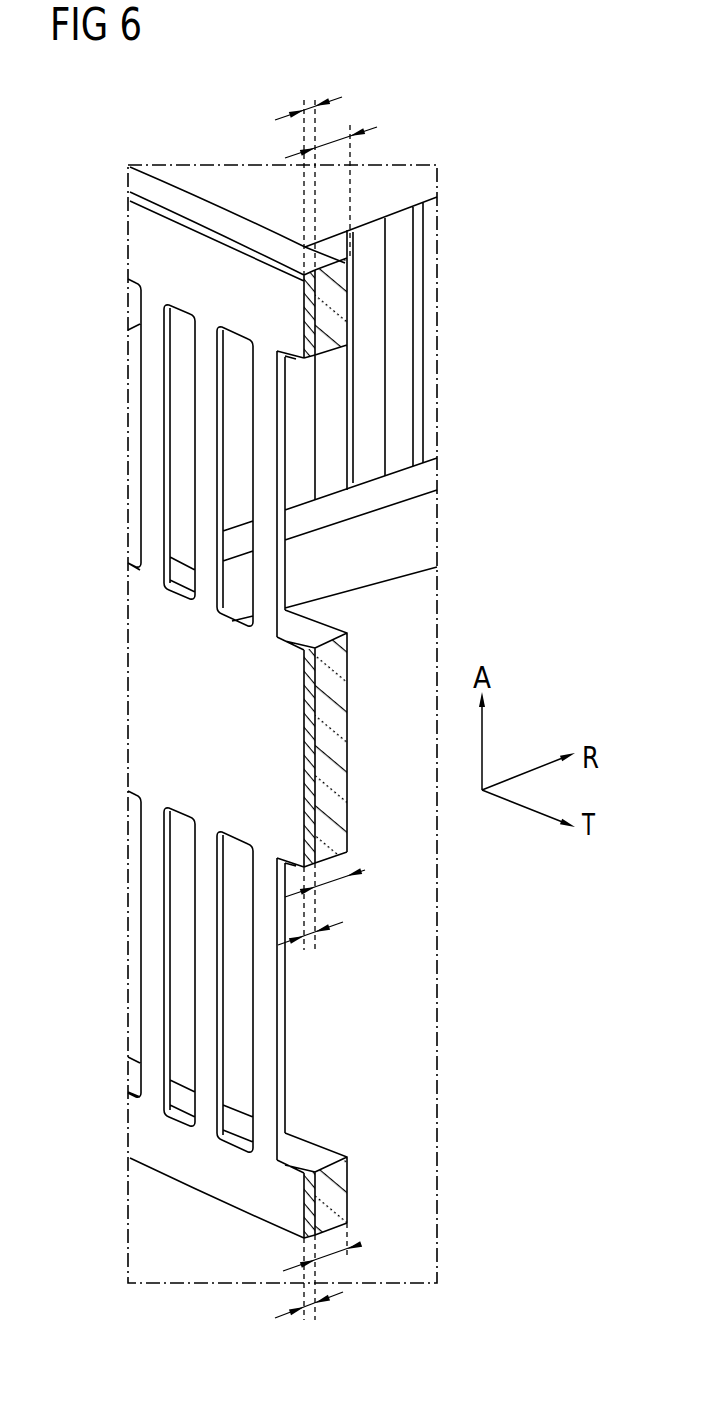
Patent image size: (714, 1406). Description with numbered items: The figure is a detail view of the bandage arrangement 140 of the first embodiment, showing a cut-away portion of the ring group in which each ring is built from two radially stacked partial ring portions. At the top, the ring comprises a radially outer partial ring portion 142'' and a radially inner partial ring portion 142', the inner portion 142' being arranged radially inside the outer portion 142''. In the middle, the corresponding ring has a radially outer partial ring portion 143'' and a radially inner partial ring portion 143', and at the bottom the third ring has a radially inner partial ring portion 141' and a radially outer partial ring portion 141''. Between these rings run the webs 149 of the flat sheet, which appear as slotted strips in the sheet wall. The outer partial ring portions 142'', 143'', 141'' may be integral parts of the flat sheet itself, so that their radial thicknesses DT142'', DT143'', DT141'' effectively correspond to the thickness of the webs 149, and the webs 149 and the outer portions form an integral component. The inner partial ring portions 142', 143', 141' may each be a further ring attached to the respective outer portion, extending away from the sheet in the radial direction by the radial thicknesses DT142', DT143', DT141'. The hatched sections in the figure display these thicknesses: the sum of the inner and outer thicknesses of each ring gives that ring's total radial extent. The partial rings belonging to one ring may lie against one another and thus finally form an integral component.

The bandage arrangement 140 is at (341, 710).
The radially outer partial ring portion 142'' is at (196, 262).
The radially inner partial ring portion 142' is at (407, 348).
The webs 149 is at (152, 457).
The radially outer partial ring portion 143'' is at (247, 503).
The radially inner partial ring portion 143' is at (355, 738).
The radially inner partial ring portion 141' is at (319, 1166).
The radially outer partial ring portion 141'' is at (217, 1054).
The thickness of radially outer partial ring portion DT142'' is at (290, 148).
The thickness of radially inner partial ring portion DT142' is at (351, 155).
The thickness of radially inner partial ring portion DT143' is at (359, 906).
The thickness of radially outer partial ring portion DT143'' is at (350, 961).
The thickness of radially inner partial ring portion DT141' is at (370, 1283).
The thickness of radially outer partial ring portion DT141'' is at (308, 1338).